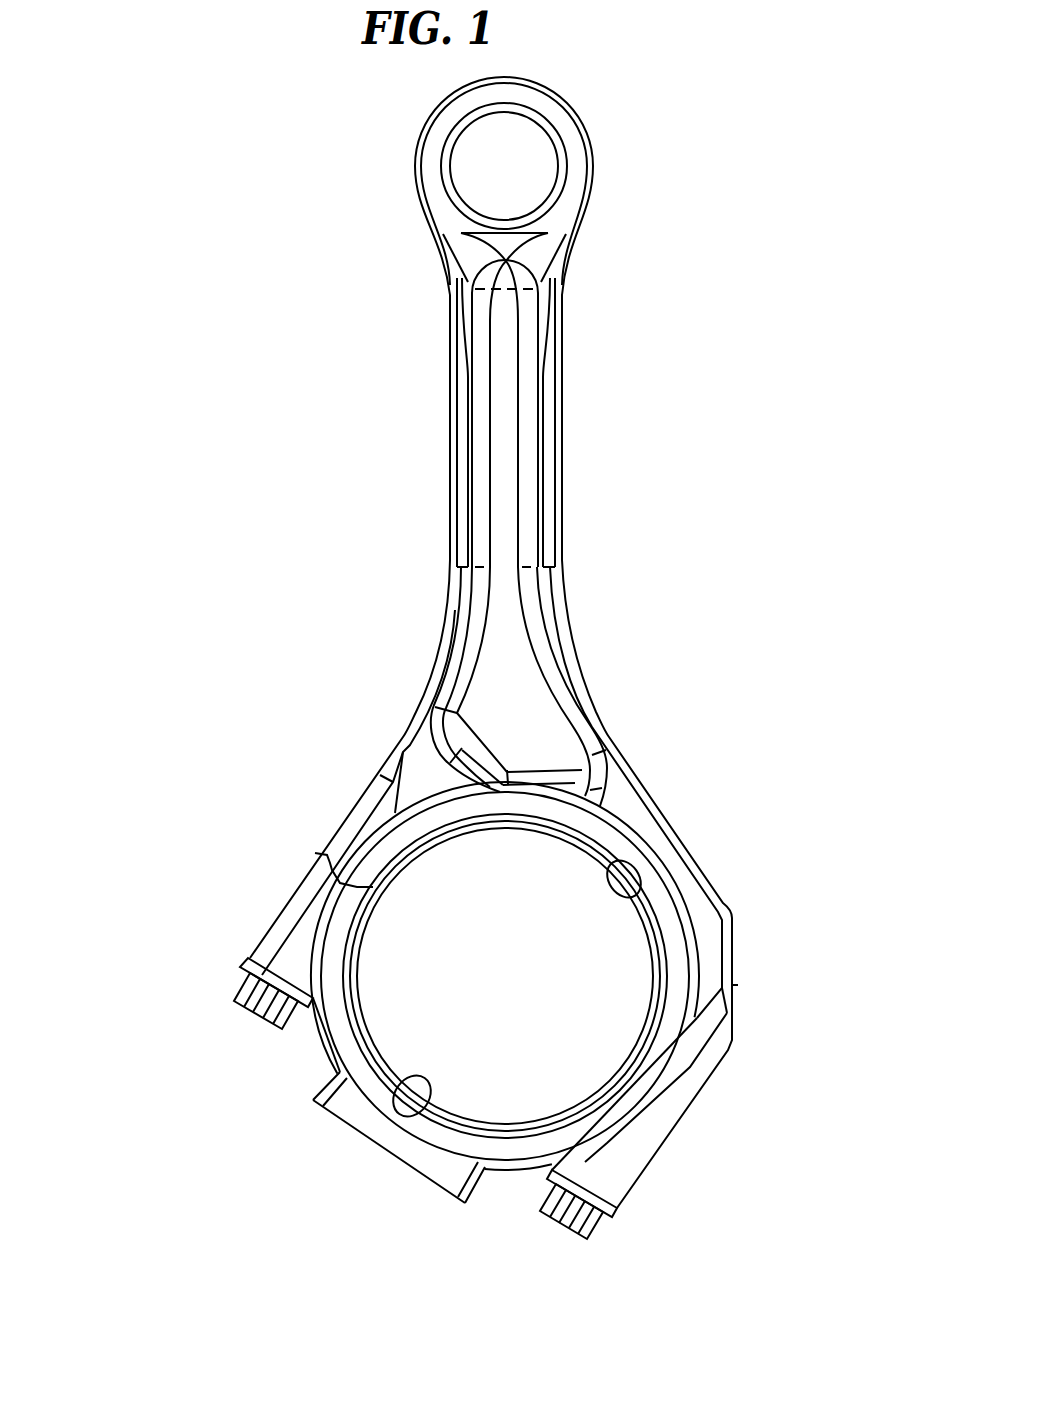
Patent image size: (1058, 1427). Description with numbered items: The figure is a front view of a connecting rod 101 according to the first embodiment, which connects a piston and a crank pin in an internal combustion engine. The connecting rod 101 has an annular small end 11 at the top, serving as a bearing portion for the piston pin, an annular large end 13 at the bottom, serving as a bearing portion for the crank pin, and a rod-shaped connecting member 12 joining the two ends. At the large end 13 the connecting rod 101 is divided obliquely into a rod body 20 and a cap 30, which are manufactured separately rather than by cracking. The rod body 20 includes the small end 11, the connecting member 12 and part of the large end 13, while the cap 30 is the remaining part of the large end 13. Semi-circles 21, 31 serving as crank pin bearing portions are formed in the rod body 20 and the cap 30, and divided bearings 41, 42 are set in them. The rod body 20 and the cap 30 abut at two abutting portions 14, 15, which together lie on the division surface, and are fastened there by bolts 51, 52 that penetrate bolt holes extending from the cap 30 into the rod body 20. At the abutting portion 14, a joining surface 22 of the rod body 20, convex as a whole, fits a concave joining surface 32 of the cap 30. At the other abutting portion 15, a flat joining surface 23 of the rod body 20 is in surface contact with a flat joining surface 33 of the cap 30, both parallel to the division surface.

The connecting rod 101 is at (372, 389).
The small end 11 is at (598, 166).
The connecting member 12 is at (563, 512).
The rod body 20 is at (452, 543).
The abutting portion 14 is at (309, 848).
The large end 13 is at (738, 985).
The abutting portion 15 is at (703, 1106).
The semi-circle 21 is at (634, 890).
The joining surface 22 is at (314, 872).
The joining surface 23 is at (683, 1115).
The cap 30 is at (252, 945).
The semi-circle 31 is at (423, 1123).
The joining surface 32 is at (372, 887).
The joining surface 33 is at (662, 1072).
The divided bearing 41 is at (494, 832).
The divided bearing 42 is at (507, 1120).
The bolt 51 is at (262, 1030).
The bolt 52 is at (563, 1232).